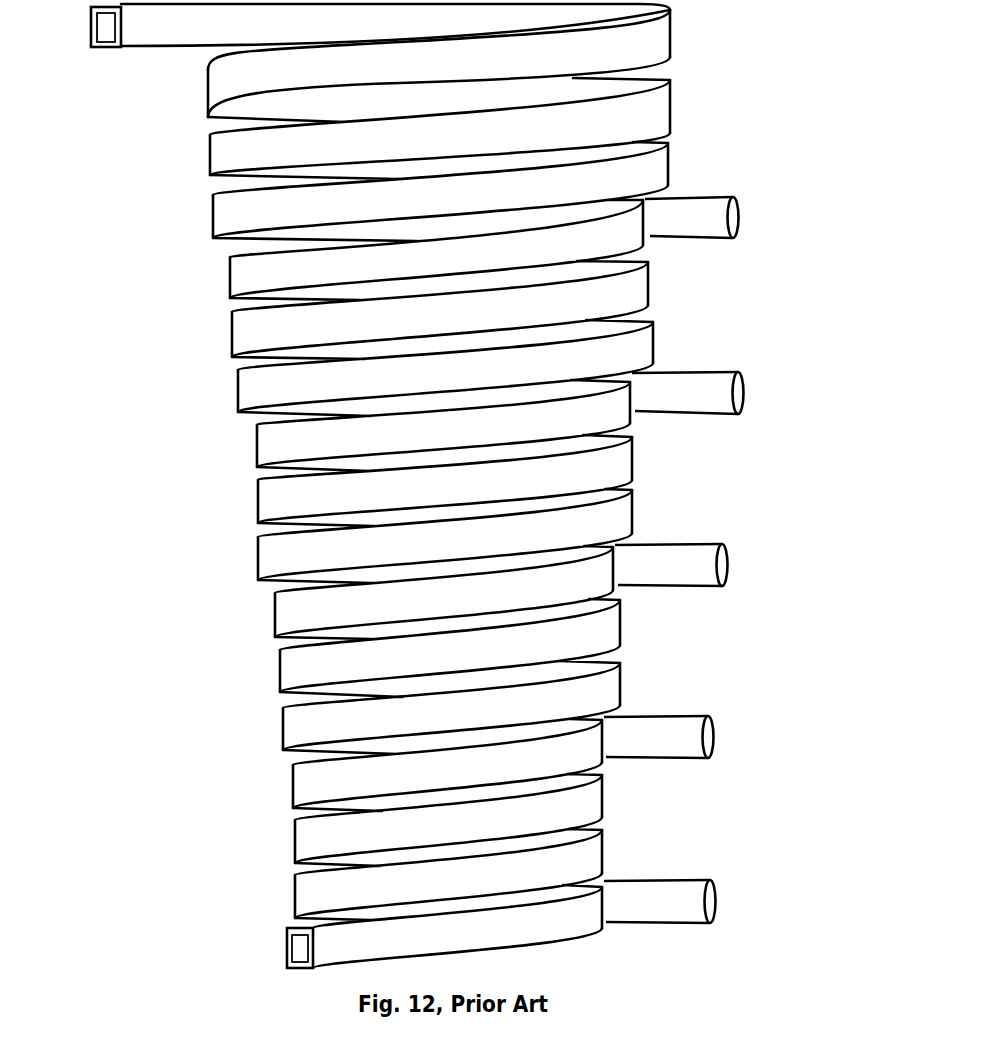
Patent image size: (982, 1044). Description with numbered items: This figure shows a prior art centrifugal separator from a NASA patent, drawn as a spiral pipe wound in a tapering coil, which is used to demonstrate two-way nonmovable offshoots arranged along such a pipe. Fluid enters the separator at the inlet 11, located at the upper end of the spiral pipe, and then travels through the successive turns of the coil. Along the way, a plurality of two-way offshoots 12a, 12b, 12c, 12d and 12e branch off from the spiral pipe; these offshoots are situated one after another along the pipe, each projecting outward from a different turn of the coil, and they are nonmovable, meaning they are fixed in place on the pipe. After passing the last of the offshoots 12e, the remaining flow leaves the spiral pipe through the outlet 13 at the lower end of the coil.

The inlet 11 is at (105, 28).
The offshoot 12a is at (740, 218).
The offshoot 12b is at (745, 395).
The offshoot 12c is at (728, 566).
The offshoot 12d is at (714, 738).
The offshoot 12e is at (716, 901).
The outlet 13 is at (300, 948).